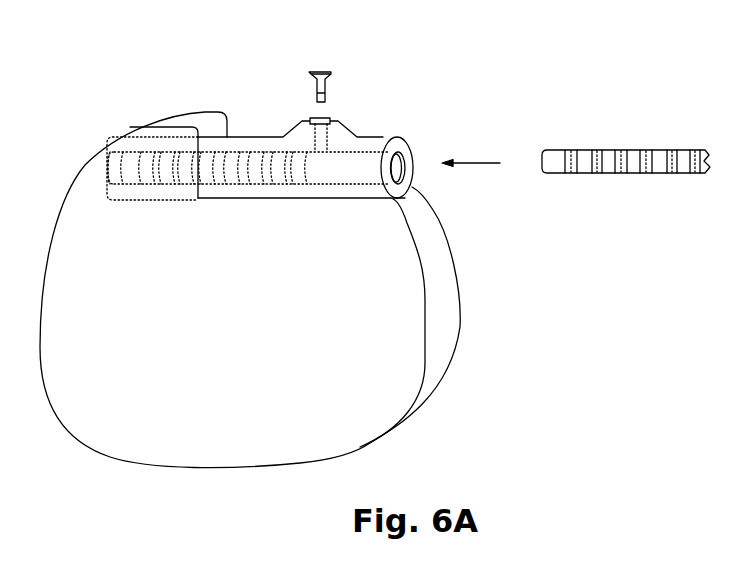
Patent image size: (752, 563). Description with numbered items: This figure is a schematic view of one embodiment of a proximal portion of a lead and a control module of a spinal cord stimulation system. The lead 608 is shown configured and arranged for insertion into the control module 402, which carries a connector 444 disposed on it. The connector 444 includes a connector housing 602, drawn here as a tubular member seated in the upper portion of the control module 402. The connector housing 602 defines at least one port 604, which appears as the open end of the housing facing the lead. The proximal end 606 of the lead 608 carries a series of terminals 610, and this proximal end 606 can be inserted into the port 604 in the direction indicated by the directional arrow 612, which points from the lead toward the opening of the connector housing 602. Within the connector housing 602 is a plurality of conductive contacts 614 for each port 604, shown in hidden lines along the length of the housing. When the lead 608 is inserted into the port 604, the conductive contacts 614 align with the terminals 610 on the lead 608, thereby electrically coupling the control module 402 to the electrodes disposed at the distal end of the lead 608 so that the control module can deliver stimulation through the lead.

The control module 402 is at (84, 116).
The connector 444 is at (252, 137).
The connector housing 602 is at (137, 143).
The port 604 is at (418, 140).
The proximal end 606 is at (607, 125).
The lead 608 is at (652, 148).
The terminals 610 is at (703, 177).
The directional arrow 612 is at (478, 163).
The conductive contacts 614 is at (318, 209).